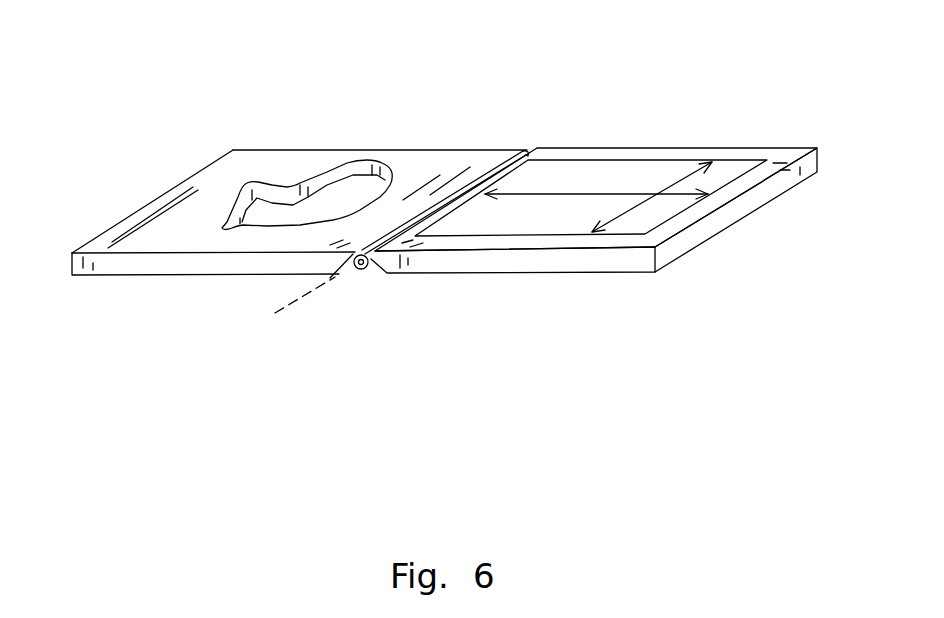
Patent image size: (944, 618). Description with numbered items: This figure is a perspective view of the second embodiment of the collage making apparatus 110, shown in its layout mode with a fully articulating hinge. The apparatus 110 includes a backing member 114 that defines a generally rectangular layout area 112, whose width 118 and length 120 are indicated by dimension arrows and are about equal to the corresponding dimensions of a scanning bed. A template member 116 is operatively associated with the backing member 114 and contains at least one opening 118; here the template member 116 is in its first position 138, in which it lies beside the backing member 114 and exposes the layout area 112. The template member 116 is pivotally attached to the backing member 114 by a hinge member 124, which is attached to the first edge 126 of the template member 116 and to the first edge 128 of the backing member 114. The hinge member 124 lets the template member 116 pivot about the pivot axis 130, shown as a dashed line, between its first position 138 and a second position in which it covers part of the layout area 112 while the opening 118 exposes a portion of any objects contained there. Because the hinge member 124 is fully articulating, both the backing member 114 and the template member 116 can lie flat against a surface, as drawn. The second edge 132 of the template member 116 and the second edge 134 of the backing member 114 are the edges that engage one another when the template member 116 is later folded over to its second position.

The collage making apparatus 110 is at (172, 91).
The layout area 112 is at (528, 228).
The backing member 114 is at (730, 148).
The template member 116 is at (432, 149).
The opening 118 is at (352, 135).
The length 120 is at (593, 192).
The hinge member 124 is at (371, 264).
The first edge of template member 126 is at (483, 176).
The first edge of backing member 128 is at (528, 156).
The pivot axis 130 is at (287, 307).
The second edge of template member 132 is at (117, 223).
The second edge of backing member 134 is at (740, 219).
The first position 138 is at (297, 116).